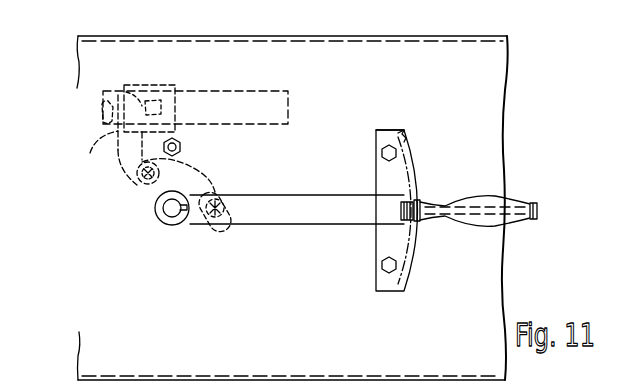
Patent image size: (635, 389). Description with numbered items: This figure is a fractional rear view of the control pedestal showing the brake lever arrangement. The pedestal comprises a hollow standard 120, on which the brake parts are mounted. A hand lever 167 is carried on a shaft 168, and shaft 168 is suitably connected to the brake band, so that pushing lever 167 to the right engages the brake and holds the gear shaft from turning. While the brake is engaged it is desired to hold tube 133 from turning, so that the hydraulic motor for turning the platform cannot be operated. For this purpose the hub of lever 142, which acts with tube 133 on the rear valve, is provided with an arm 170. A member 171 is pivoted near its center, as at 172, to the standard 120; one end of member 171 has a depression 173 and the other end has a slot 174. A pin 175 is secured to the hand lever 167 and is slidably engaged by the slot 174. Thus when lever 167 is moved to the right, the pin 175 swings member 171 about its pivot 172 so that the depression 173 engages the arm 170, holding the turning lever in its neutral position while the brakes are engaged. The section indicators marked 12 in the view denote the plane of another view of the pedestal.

The section line 12- 12 is at (68, 182).
The hollow standard 120 is at (312, 30).
The tube 133 is at (265, 127).
The lever 142 is at (152, 85).
The hand lever 167 is at (305, 232).
The shaft 168 is at (172, 216).
The arm 170 is at (163, 104).
The member 171 is at (145, 161).
The pivot 172 is at (142, 187).
The depression 173 is at (130, 93).
The slot 174 is at (229, 229).
The pin 175 is at (226, 208).